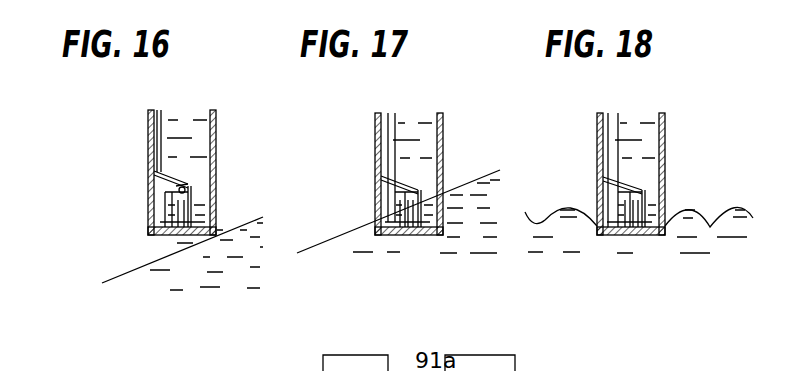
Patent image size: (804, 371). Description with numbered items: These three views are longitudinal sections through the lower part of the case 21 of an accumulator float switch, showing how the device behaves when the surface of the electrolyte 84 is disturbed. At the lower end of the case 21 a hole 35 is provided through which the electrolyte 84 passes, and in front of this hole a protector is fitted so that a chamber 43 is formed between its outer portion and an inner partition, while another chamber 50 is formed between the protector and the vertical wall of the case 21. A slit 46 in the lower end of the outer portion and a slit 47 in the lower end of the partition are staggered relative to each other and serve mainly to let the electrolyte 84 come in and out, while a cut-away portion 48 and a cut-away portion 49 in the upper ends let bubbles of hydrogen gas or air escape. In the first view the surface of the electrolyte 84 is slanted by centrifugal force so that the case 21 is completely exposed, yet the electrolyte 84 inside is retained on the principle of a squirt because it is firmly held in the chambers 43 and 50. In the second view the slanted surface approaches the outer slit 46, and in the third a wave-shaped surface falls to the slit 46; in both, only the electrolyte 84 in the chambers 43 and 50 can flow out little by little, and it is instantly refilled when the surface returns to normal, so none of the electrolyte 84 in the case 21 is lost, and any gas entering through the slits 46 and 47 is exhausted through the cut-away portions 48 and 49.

In FIG. 16, the case 21 is at (148, 121).
In FIG. 17, the case 21 is at (375, 123).
In FIG. 18, the case 21 is at (597, 123).
In FIG. 16, the cut-away portion 48 is at (148, 181).
In FIG. 16, the chamber 43 is at (150, 196).
In FIG. 17, the chamber 43 is at (377, 197).
In FIG. 18, the chamber 43 is at (600, 200).
In FIG. 16, the slit 46 is at (149, 222).
In FIG. 17, the slit 46 is at (377, 222).
In FIG. 18, the slit 46 is at (600, 223).
In FIG. 16, the cut-away portion 49 is at (183, 181).
In FIG. 16, the chamber 50 is at (188, 197).
In FIG. 17, the chamber 50 is at (418, 190).
In FIG. 18, the chamber 50 is at (637, 197).
In FIG. 16, the hole 35 is at (216, 222).
In FIG. 17, the hole 35 is at (443, 196).
In FIG. 18, the hole 35 is at (654, 227).
In FIG. 16, the slit 47 is at (181, 237).
In FIG. 17, the slit 47 is at (390, 233).
In FIG. 18, the slit 47 is at (617, 233).
In FIG. 16, the electrolyte 84 is at (147, 270).
In FIG. 17, the electrolyte 84 is at (343, 242).
In FIG. 18, the electrolyte 84 is at (713, 213).